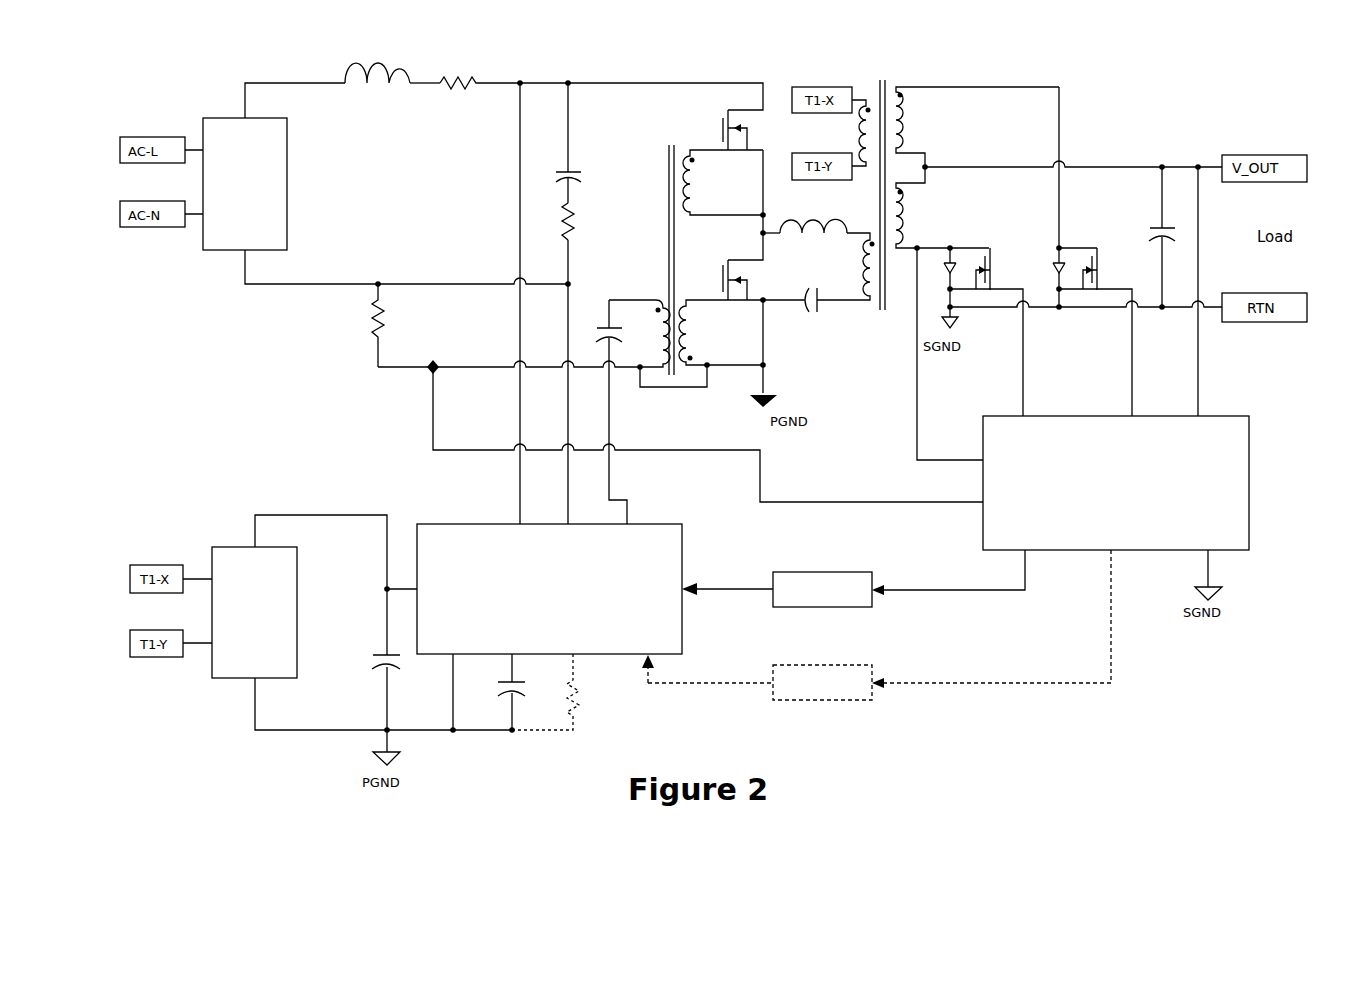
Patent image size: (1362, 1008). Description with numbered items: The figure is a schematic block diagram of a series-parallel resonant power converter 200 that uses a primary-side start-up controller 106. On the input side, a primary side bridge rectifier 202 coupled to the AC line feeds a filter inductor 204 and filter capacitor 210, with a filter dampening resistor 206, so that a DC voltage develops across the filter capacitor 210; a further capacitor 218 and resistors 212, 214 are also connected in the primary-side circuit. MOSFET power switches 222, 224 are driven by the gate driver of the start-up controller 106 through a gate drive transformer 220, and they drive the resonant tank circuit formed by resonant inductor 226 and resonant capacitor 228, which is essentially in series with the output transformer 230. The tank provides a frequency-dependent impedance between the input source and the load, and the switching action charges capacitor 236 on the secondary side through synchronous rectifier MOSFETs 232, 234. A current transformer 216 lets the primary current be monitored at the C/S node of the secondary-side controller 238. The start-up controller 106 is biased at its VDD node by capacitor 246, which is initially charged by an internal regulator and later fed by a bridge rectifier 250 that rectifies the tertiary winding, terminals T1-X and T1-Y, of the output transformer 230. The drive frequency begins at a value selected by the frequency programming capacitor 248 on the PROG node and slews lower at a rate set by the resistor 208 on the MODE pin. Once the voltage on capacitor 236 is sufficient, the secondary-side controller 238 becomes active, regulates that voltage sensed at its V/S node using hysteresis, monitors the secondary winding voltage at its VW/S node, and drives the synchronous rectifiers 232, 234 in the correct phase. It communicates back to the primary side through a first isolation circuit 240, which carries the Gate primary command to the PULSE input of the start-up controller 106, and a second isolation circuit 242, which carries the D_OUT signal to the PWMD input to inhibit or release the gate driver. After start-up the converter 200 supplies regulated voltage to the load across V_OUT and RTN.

The series-parallel resonant power converter 200 is at (1170, 94).
The primary side bridge rectifier 202 is at (290, 158).
The filter inductor 204 is at (386, 57).
The filter dampening resistor 206 is at (462, 73).
The resistor 208 is at (579, 688).
The filter capacitor 210 is at (582, 183).
The resistor 212 is at (577, 220).
The resistor 214 is at (369, 303).
The current transformer 216 is at (445, 347).
The capacitor 218 is at (600, 340).
The gate drive transformer 220 is at (670, 145).
The MOSFET power switch 222 is at (720, 123).
The MOSFET power switch 224 is at (720, 277).
The resonant inductor 226 is at (805, 232).
The resonant capacitor 228 is at (812, 312).
The output transformer 230 is at (880, 80).
The synchronous rectifier MOSFET 232 is at (992, 260).
The synchronous rectifier MOSFET 234 is at (1100, 260).
The capacitor 236 is at (1157, 227).
The secondary-side controller 238 is at (1230, 416).
The first isolation circuit 240 is at (813, 572).
The second isolation circuit 242 is at (817, 665).
The capacitor 246 is at (378, 655).
The frequency programming capacitor 248 is at (523, 693).
The bridge rectifier 250 is at (297, 573).
The primary-side start-up controller 106 is at (682, 550).